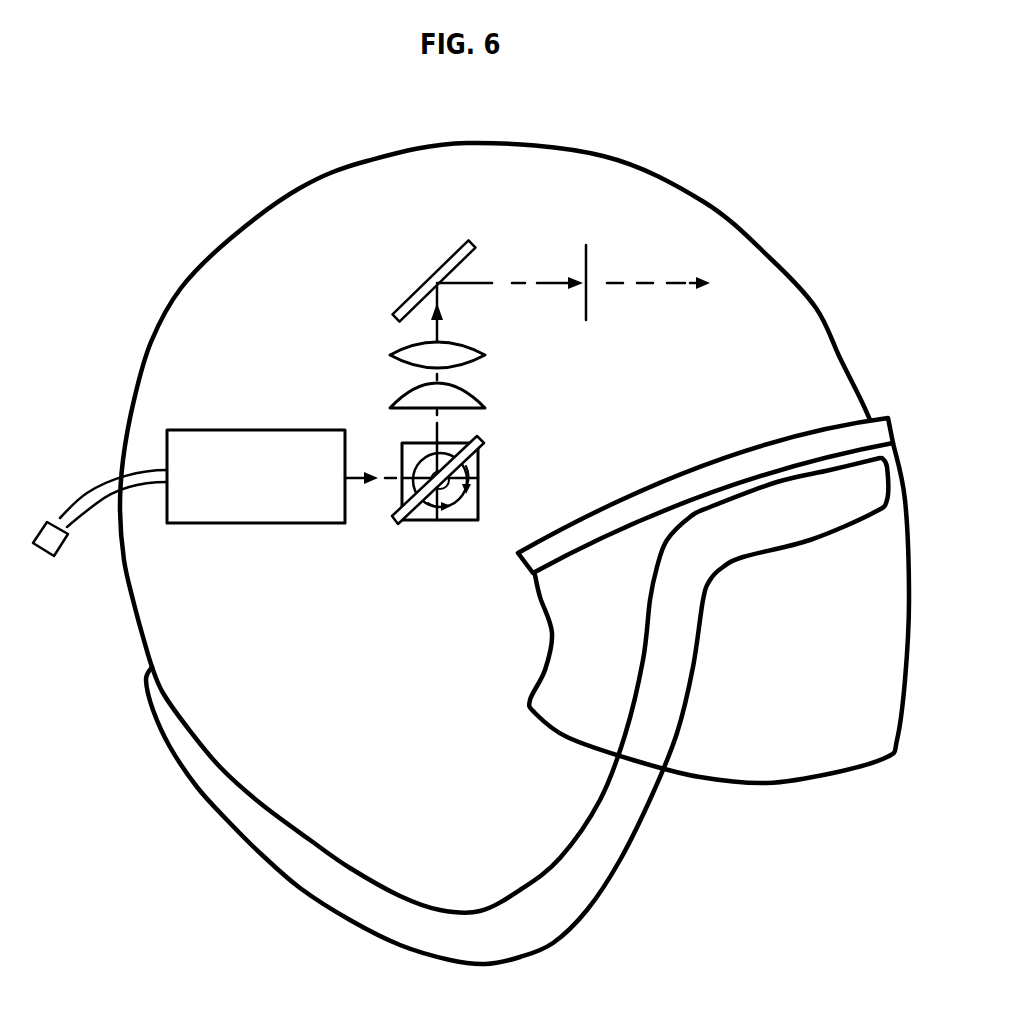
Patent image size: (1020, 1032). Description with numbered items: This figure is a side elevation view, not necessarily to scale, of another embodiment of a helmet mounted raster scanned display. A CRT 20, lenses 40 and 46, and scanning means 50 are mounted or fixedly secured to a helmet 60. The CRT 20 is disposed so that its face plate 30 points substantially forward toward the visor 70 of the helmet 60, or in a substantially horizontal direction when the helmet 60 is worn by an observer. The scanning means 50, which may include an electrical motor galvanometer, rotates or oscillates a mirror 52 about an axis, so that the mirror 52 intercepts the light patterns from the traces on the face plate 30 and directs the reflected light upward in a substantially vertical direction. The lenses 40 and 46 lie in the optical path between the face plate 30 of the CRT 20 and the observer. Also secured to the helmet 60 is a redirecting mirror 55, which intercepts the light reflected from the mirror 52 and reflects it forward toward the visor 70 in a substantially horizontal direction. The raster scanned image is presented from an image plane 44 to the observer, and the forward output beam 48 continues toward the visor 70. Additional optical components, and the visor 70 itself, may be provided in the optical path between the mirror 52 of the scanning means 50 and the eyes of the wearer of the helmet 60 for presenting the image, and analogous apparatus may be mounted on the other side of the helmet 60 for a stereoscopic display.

The CRT 20 is at (247, 428).
The face plate 30 is at (352, 440).
The lens 40 is at (490, 403).
The image plane 44 is at (623, 330).
The lens 46 is at (490, 353).
The output beam path 48 is at (497, 275).
The scanning means 50 is at (483, 500).
The mirror 52 is at (398, 532).
The redirecting mirror 55 is at (469, 563).
The helmet 60 is at (813, 310).
The visor 70 is at (735, 790).